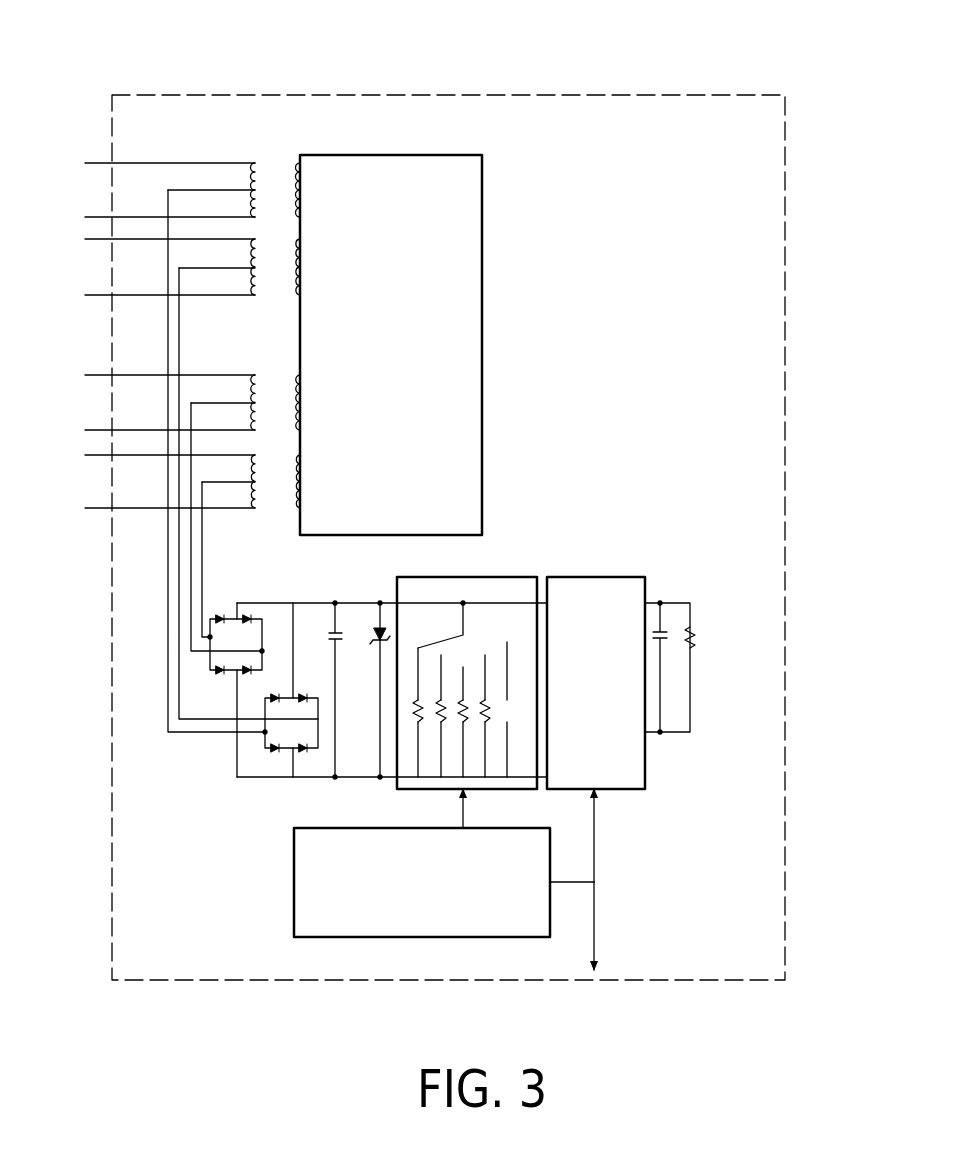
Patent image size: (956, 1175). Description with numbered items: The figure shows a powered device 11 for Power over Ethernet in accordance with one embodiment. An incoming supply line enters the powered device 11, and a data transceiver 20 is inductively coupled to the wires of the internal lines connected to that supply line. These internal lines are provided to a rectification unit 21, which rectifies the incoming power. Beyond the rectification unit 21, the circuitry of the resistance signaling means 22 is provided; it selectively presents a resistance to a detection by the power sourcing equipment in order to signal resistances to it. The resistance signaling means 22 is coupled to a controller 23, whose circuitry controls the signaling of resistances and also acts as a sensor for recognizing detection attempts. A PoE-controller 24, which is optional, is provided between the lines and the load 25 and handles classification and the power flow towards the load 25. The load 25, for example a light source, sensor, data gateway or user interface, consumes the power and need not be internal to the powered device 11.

The powered device 11 is at (390, 95).
The data transceiver 20 is at (487, 235).
The rectification unit 21 is at (232, 793).
The resistance signaling means 22 is at (503, 577).
The controller 23 is at (294, 890).
The PoE-controller 24 is at (612, 577).
The load 25 is at (703, 663).